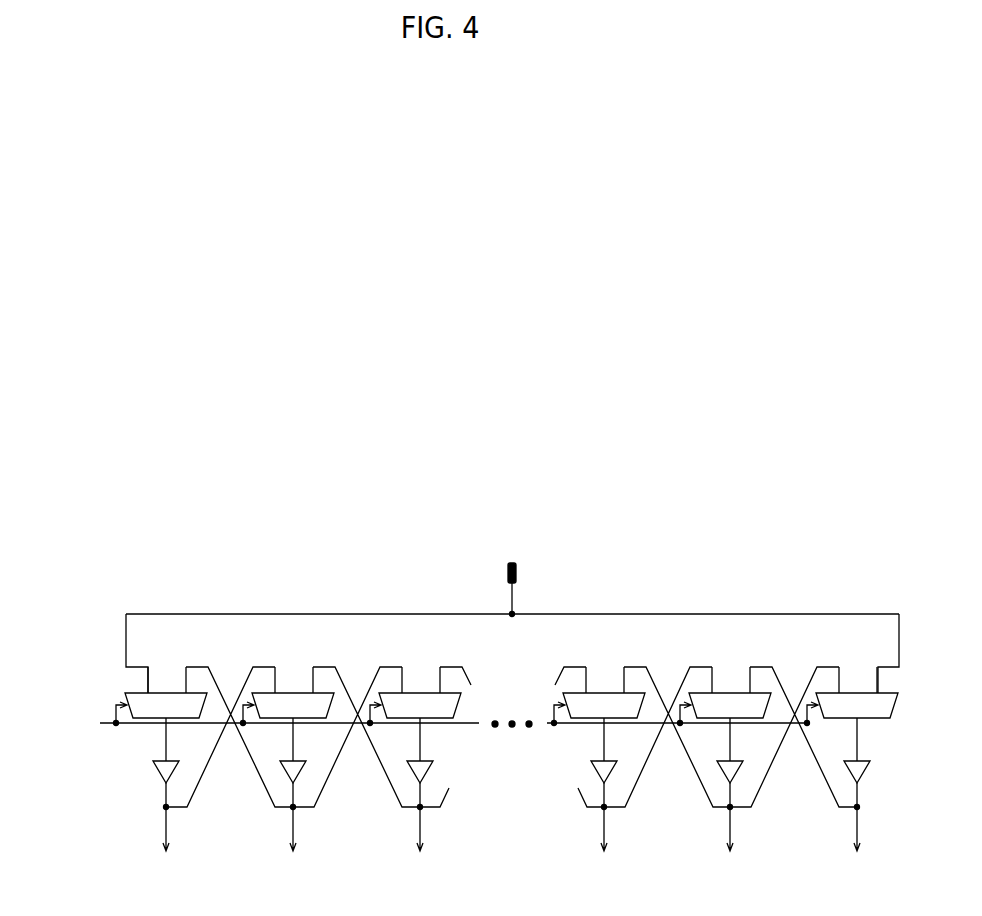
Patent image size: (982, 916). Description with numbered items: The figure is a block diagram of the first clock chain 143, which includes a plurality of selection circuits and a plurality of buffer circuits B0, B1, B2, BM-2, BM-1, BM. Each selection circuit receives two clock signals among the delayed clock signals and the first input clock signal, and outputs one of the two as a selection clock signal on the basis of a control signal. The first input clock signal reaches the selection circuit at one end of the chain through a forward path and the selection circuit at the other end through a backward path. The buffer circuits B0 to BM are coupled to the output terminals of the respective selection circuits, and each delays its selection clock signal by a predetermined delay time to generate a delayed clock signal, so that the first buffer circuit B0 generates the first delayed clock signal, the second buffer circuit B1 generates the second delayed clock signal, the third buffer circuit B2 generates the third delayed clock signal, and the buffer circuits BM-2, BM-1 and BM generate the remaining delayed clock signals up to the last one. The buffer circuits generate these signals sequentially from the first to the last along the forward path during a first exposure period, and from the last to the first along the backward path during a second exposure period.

The first clock chain 143 is at (135, 540).
The first buffer circuit B0 is at (168, 758).
The second buffer circuit B1 is at (295, 758).
The third buffer circuit B2 is at (422, 758).
The buffer circuit BM-2 is at (606, 758).
The buffer circuit BM-1 is at (732, 758).
The last buffer circuit BM is at (859, 758).